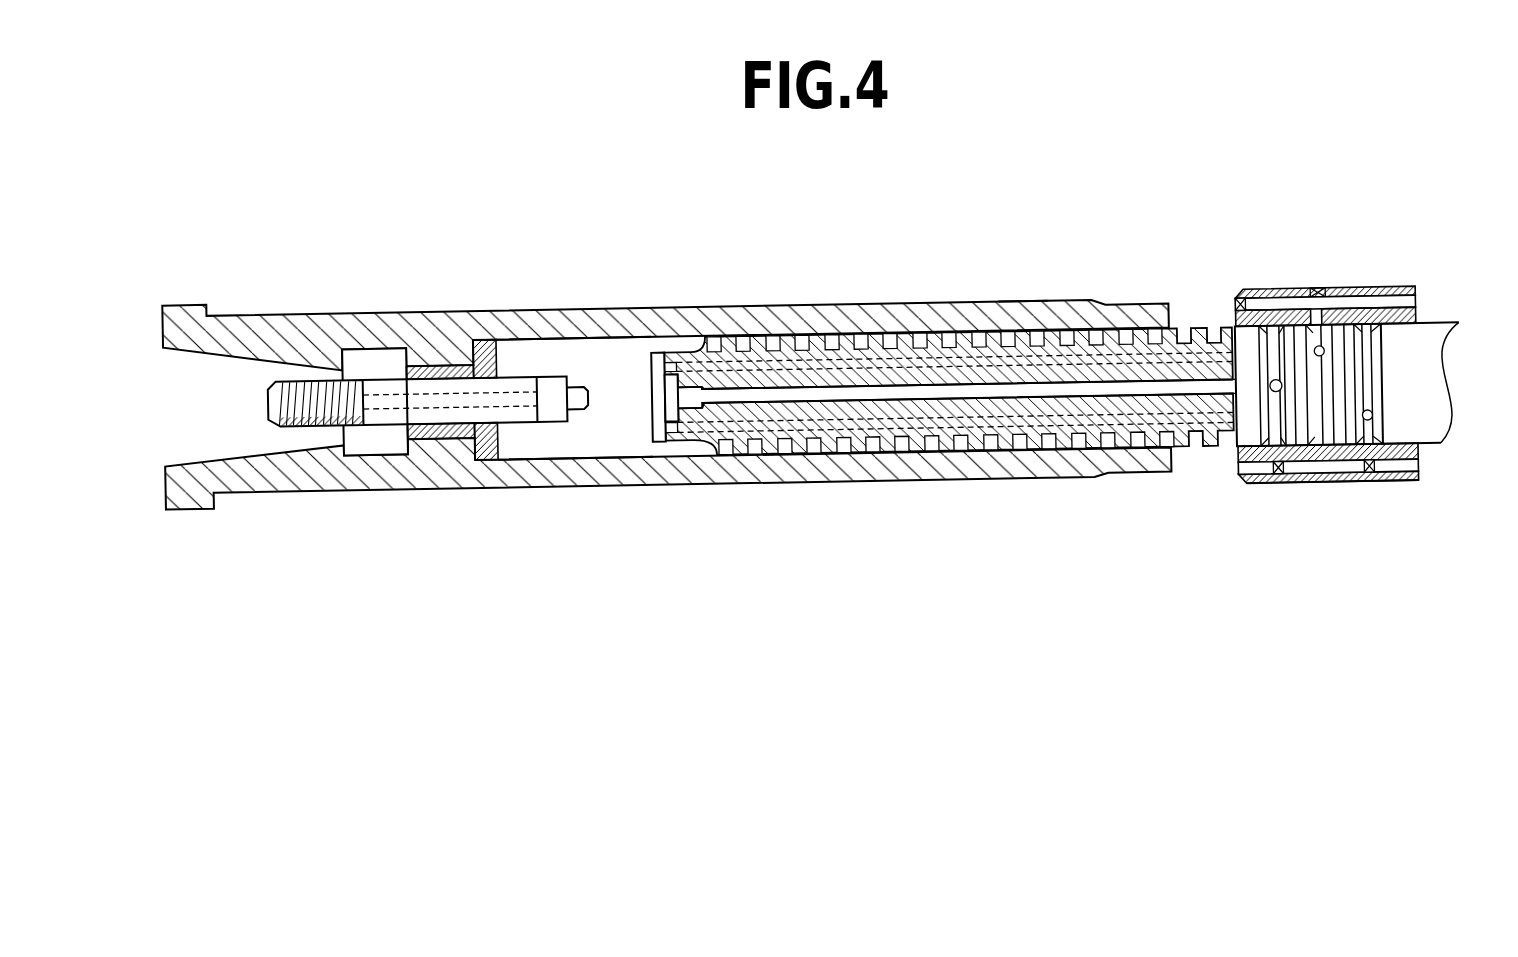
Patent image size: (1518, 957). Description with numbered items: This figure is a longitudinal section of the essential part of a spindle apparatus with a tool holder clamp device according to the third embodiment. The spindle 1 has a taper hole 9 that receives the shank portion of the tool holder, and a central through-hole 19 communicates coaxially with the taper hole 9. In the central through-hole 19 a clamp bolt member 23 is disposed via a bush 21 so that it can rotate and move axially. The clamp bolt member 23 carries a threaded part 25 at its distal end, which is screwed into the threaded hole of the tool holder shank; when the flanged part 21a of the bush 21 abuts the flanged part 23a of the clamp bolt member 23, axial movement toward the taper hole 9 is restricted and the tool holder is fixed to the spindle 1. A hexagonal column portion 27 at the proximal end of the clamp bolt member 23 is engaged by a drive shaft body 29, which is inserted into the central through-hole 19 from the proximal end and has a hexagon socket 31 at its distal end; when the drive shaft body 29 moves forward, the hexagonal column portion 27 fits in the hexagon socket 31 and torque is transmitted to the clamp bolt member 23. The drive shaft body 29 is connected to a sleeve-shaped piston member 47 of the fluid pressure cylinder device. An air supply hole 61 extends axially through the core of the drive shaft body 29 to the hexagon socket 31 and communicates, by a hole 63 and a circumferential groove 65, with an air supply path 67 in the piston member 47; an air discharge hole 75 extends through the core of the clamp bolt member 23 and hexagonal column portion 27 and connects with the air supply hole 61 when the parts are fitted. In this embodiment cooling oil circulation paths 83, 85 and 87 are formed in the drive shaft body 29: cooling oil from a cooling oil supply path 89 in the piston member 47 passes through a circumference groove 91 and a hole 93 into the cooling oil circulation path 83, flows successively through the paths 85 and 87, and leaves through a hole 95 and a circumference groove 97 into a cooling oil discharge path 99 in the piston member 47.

The spindle 1 is at (818, 313).
The taper hole 9 is at (222, 450).
The central through-hole 19 is at (620, 443).
The bush 21 is at (437, 445).
The flanged part 21a is at (482, 457).
The clamp bolt member 23 is at (433, 383).
The flanged part 23a is at (512, 353).
The threaded part 25 is at (295, 425).
The hexagonal column portion 27 is at (547, 417).
The drive shaft body 29 is at (828, 413).
The hexagon socket 31 is at (651, 387).
The piston member 47 is at (1390, 290).
The air supply hole 61 is at (965, 393).
The hole 63 is at (1276, 380).
The circumferential groove 65 is at (1250, 482).
The air supply path 67 is at (1302, 483).
The air discharge hole 75 is at (383, 407).
The cooling oil circulation path 83 is at (1020, 312).
The cooling oil circulation path 85 is at (663, 352).
The cooling oil circulation path 87 is at (1020, 312).
The cooling oil supply path 89 is at (1358, 300).
The circumference groove 91 is at (1333, 483).
The hole 93 is at (1318, 350).
The hole 95 is at (1358, 483).
The circumference groove 97 is at (1435, 345).
The cooling oil discharge path 99 is at (1393, 483).